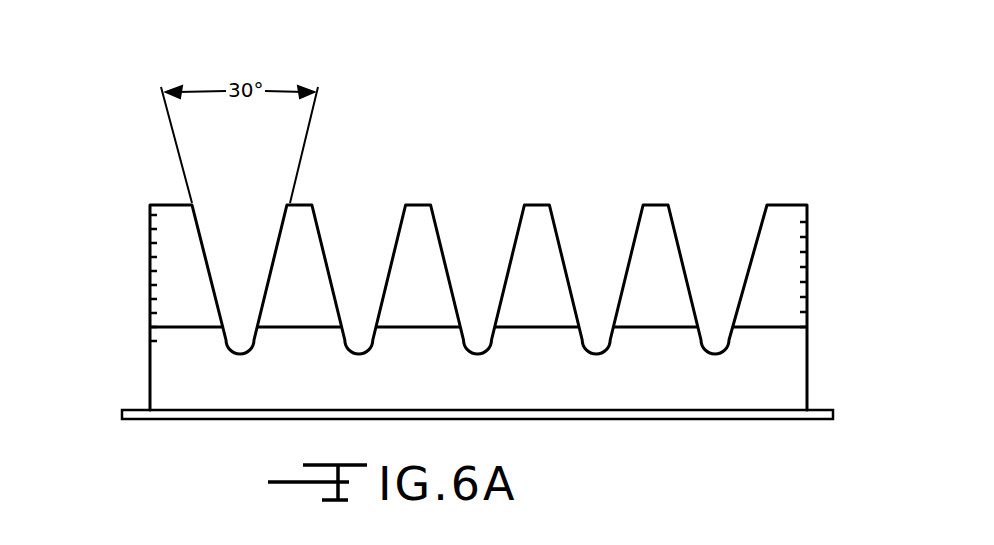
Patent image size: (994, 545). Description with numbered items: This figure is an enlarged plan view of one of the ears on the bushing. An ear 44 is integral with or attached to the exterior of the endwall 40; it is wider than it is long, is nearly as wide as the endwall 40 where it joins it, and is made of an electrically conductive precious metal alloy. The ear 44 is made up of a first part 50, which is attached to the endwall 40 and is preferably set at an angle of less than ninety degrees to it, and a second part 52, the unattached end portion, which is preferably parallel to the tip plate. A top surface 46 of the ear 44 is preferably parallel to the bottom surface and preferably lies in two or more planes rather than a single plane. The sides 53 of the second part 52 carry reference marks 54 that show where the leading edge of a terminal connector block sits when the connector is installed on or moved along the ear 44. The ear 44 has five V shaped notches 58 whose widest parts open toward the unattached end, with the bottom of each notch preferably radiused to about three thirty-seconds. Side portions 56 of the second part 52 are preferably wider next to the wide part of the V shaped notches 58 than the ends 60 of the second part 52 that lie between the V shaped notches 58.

The endwall 40 is at (815, 422).
The ear 44 is at (808, 350).
The top surface 46 is at (183, 381).
The first part 50 is at (177, 351).
The second part 52 is at (176, 305).
The sides 53 is at (150, 240).
The reference marks 54 is at (150, 230).
The side portions 56 is at (778, 283).
The V shaped notches 58 is at (583, 232).
The ends 60 is at (297, 205).